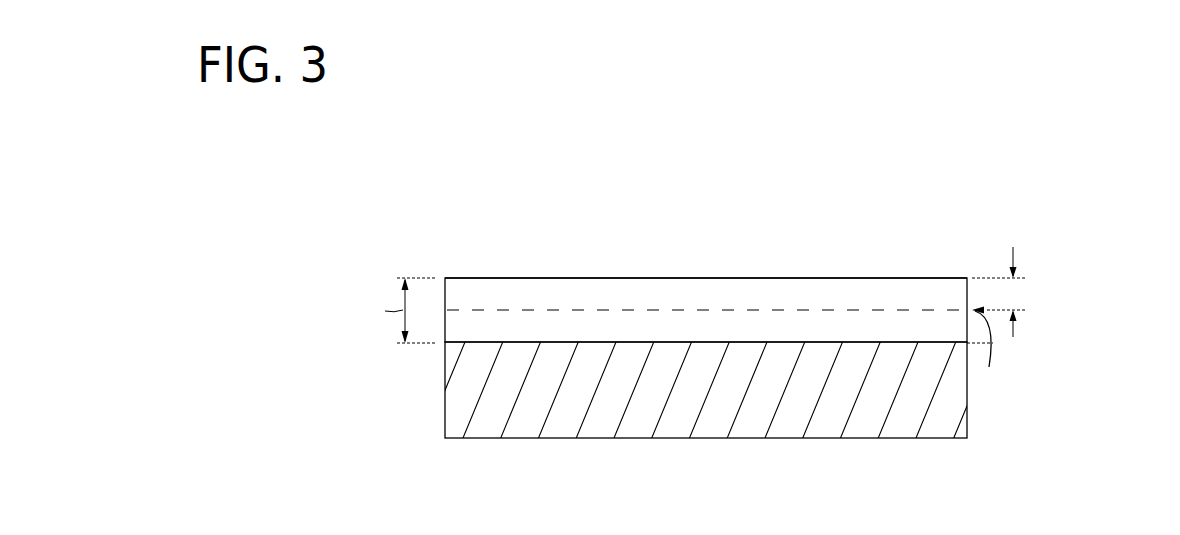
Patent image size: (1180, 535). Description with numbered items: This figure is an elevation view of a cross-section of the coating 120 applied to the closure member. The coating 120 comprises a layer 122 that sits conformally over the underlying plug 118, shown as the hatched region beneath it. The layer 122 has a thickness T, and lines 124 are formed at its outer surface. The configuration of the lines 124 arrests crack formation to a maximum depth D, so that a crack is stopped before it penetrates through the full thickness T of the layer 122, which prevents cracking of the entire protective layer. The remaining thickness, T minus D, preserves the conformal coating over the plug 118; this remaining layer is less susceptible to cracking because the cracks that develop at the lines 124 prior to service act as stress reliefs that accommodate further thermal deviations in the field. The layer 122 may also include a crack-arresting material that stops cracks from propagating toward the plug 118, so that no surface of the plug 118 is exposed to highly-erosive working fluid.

The plug 118 is at (887, 407).
The coating 120 is at (1005, 153).
The layer 122 is at (762, 297).
The lines 124 is at (892, 277).